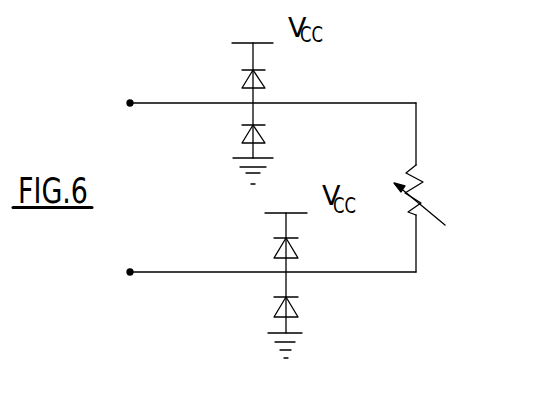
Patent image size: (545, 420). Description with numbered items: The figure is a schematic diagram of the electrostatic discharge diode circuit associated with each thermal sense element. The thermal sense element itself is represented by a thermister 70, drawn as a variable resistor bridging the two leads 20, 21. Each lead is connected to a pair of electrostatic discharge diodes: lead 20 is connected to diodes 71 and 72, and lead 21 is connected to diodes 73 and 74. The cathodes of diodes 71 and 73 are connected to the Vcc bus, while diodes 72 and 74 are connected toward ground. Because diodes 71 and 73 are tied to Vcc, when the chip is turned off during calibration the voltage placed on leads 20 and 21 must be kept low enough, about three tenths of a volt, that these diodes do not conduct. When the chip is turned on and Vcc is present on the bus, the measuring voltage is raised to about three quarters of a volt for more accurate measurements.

The lead 20 is at (172, 103).
The lead 21 is at (172, 272).
The thermister 70 is at (421, 171).
The electrostatic discharge diode 71 is at (281, 82).
The electrostatic discharge diode 72 is at (281, 139).
The electrostatic discharge diode 73 is at (314, 254).
The electrostatic discharge diode 74 is at (314, 310).